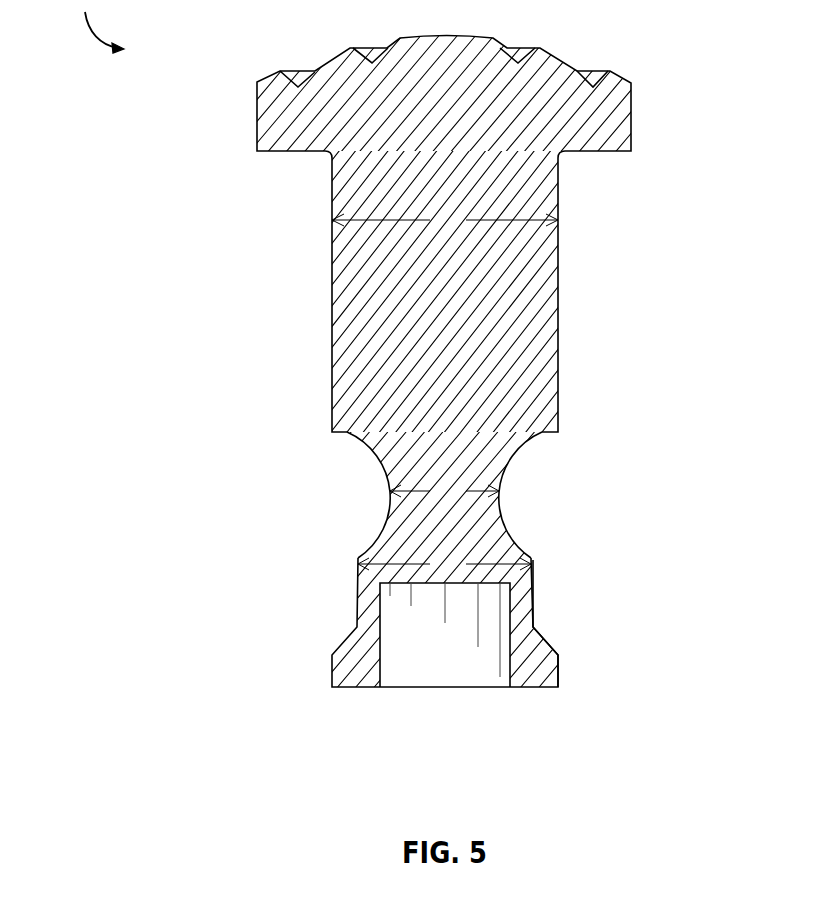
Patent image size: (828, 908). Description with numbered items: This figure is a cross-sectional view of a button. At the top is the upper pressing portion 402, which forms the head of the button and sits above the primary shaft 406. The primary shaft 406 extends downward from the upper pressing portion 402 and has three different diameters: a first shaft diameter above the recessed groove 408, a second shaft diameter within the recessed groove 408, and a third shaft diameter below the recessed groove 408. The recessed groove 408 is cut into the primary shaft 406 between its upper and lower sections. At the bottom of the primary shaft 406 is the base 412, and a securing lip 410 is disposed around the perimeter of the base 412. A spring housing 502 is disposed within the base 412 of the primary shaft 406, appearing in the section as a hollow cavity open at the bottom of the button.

The upper pressing portion 402 is at (236, 122).
The primary shaft 406 is at (236, 351).
The recessed groove 408 is at (359, 492).
The securing lip 410 is at (332, 668).
The base 412 is at (572, 612).
The spring housing 502 is at (455, 672).